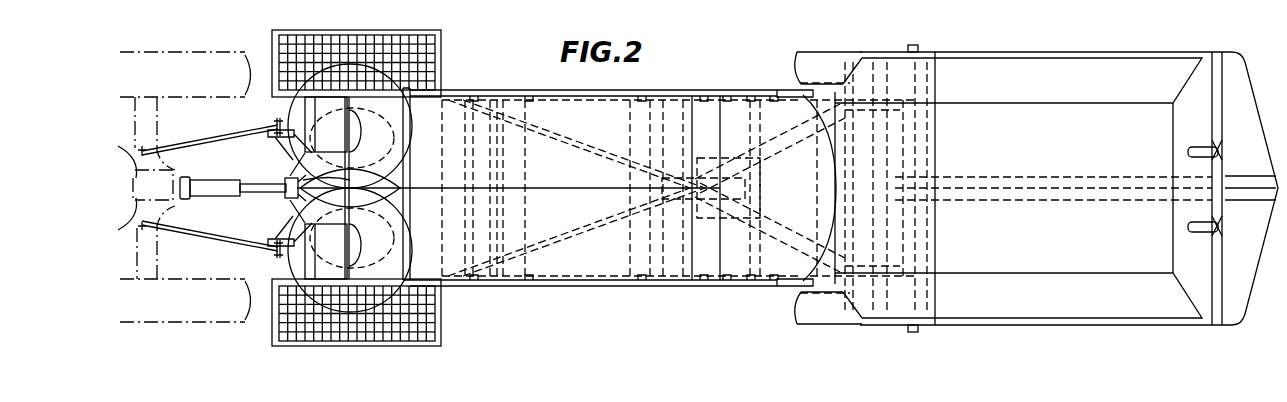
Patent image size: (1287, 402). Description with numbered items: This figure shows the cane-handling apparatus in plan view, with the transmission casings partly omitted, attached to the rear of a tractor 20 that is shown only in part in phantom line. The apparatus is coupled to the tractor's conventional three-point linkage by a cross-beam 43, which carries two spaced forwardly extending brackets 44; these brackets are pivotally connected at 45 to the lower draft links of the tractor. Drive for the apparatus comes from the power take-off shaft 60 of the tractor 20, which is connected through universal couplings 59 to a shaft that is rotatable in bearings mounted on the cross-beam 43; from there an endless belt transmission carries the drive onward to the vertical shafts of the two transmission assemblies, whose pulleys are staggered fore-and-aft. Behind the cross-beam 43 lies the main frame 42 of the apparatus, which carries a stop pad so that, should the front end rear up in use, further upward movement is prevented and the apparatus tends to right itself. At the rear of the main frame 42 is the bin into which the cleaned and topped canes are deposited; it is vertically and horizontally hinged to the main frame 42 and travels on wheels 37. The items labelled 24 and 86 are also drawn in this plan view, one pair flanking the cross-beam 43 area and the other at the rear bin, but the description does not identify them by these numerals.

The tractor 20 is at (189, 40).
The wheel grid platform 24 is at (403, 31).
The wheels 37 is at (823, 61).
The main frame 42 is at (500, 92).
The cross-beam 43 is at (310, 120).
The brackets 44 is at (276, 158).
The pivotal connection 45 is at (274, 127).
The universal couplings 59 is at (305, 180).
The power take-off shaft 60 is at (208, 180).
The rear body 86 is at (1092, 44).